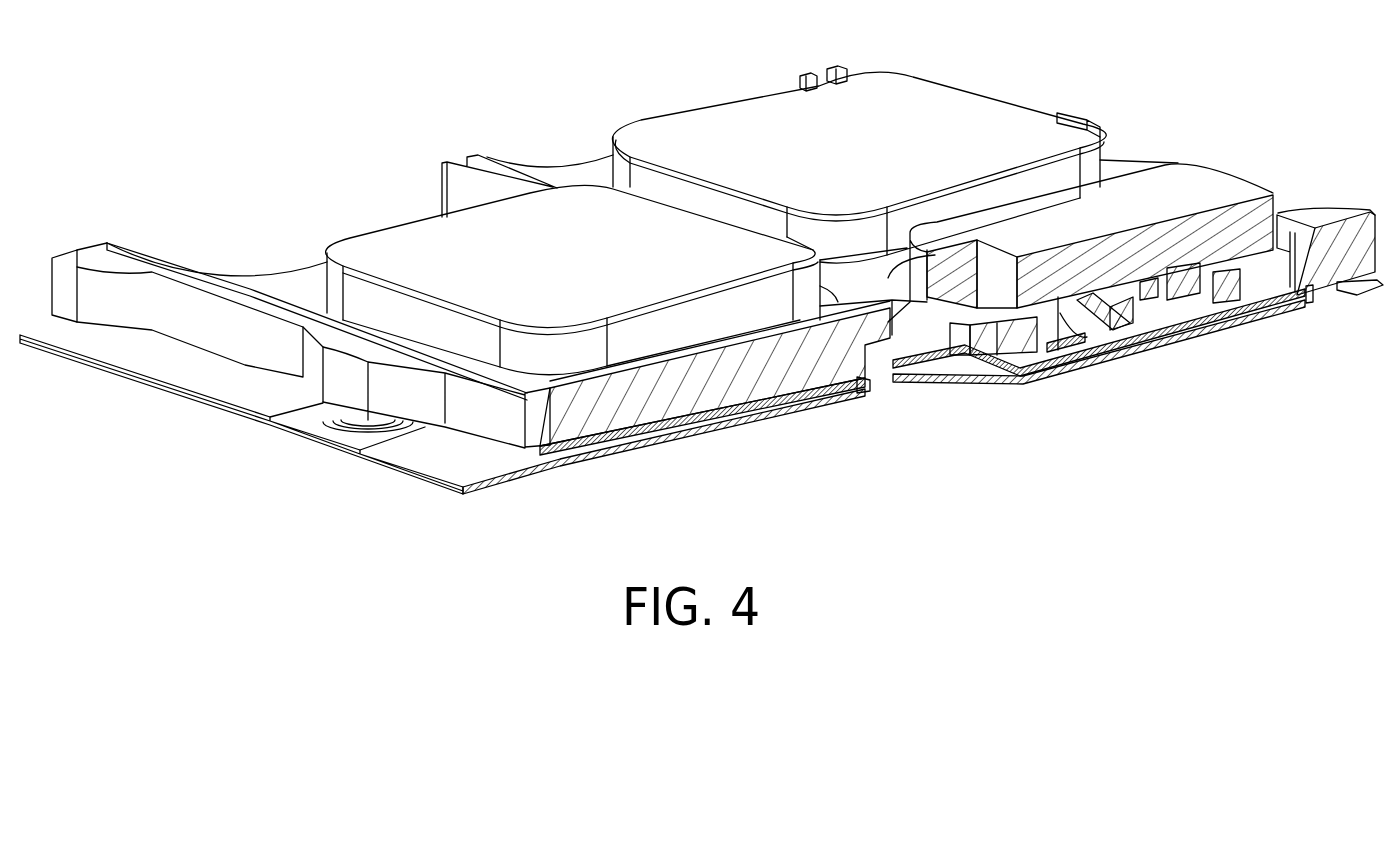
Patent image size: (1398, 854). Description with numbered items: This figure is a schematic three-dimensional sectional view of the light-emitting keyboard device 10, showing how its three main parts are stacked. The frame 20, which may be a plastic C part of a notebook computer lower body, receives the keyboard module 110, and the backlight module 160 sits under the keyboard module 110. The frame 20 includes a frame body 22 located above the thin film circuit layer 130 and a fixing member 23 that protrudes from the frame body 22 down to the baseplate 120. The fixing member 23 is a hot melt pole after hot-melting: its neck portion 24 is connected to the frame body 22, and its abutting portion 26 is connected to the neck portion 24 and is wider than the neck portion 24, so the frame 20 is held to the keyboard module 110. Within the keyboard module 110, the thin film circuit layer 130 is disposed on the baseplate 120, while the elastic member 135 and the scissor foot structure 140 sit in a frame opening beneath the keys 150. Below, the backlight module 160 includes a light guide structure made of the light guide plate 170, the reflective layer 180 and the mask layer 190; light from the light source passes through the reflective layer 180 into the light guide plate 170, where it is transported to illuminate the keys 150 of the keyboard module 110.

The light-emitting keyboard device 10 is at (1343, 542).
The frame 20 is at (501, 400).
The frame body 22 is at (833, 358).
The fixing member 23 is at (706, 437).
The neck portion 24 is at (882, 370).
The abutting portion 26 is at (898, 365).
The keyboard module 110 is at (1135, 296).
The baseplate 120 is at (1190, 340).
The thin film circuit layer 130 is at (1138, 340).
The elastic member 135 is at (1241, 328).
The scissor foot structure 140 is at (1260, 240).
The keys 150 is at (1305, 302).
The backlight module 160 is at (1099, 383).
The light guide plate 170 is at (1020, 372).
The reflective layer 180 is at (985, 372).
The mask layer 190 is at (1076, 380).